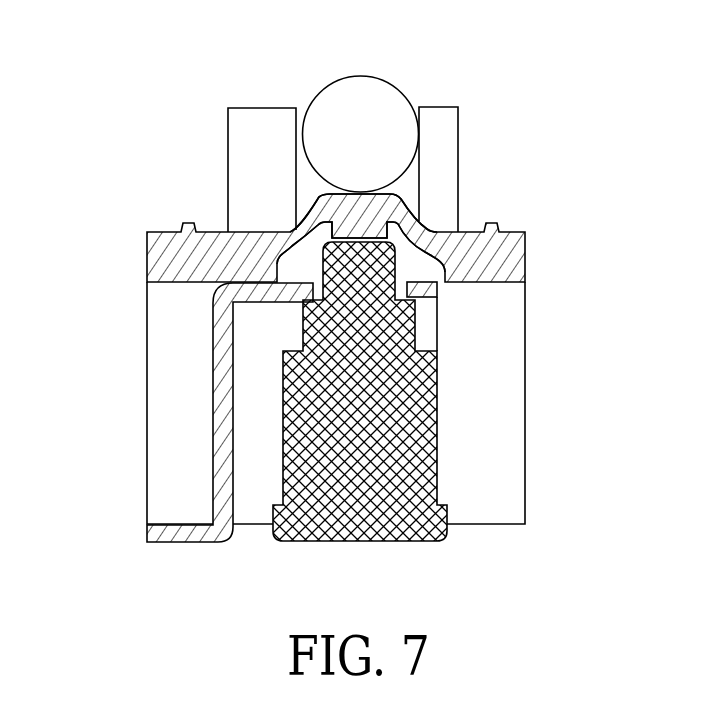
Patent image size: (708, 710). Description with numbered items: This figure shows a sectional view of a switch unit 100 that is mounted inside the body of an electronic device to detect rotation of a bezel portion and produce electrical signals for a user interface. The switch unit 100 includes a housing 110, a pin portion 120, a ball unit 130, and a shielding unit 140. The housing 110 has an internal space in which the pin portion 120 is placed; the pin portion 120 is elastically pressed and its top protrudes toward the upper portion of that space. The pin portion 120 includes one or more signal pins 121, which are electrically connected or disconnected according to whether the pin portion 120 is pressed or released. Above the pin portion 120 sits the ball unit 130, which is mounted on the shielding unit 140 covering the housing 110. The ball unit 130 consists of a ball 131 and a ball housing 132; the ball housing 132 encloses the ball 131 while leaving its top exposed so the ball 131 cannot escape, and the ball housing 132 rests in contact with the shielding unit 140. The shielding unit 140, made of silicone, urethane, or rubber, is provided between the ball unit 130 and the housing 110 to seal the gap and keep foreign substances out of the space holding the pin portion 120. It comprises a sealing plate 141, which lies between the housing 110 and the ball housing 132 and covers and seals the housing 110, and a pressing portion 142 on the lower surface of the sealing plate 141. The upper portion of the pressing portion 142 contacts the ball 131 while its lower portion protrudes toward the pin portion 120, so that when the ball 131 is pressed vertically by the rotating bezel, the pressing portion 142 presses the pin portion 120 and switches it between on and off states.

The switch unit 100 is at (118, 73).
The housing 110 is at (508, 378).
The pin portion 120 is at (423, 458).
The signal pin 121 is at (213, 460).
The ball unit 130 is at (426, 154).
The ball 131 is at (400, 130).
The ball housing 132 is at (448, 187).
The shielding unit 140 is at (322, 289).
The sealing plate 141 is at (167, 255).
The pressing portion 142 is at (330, 222).